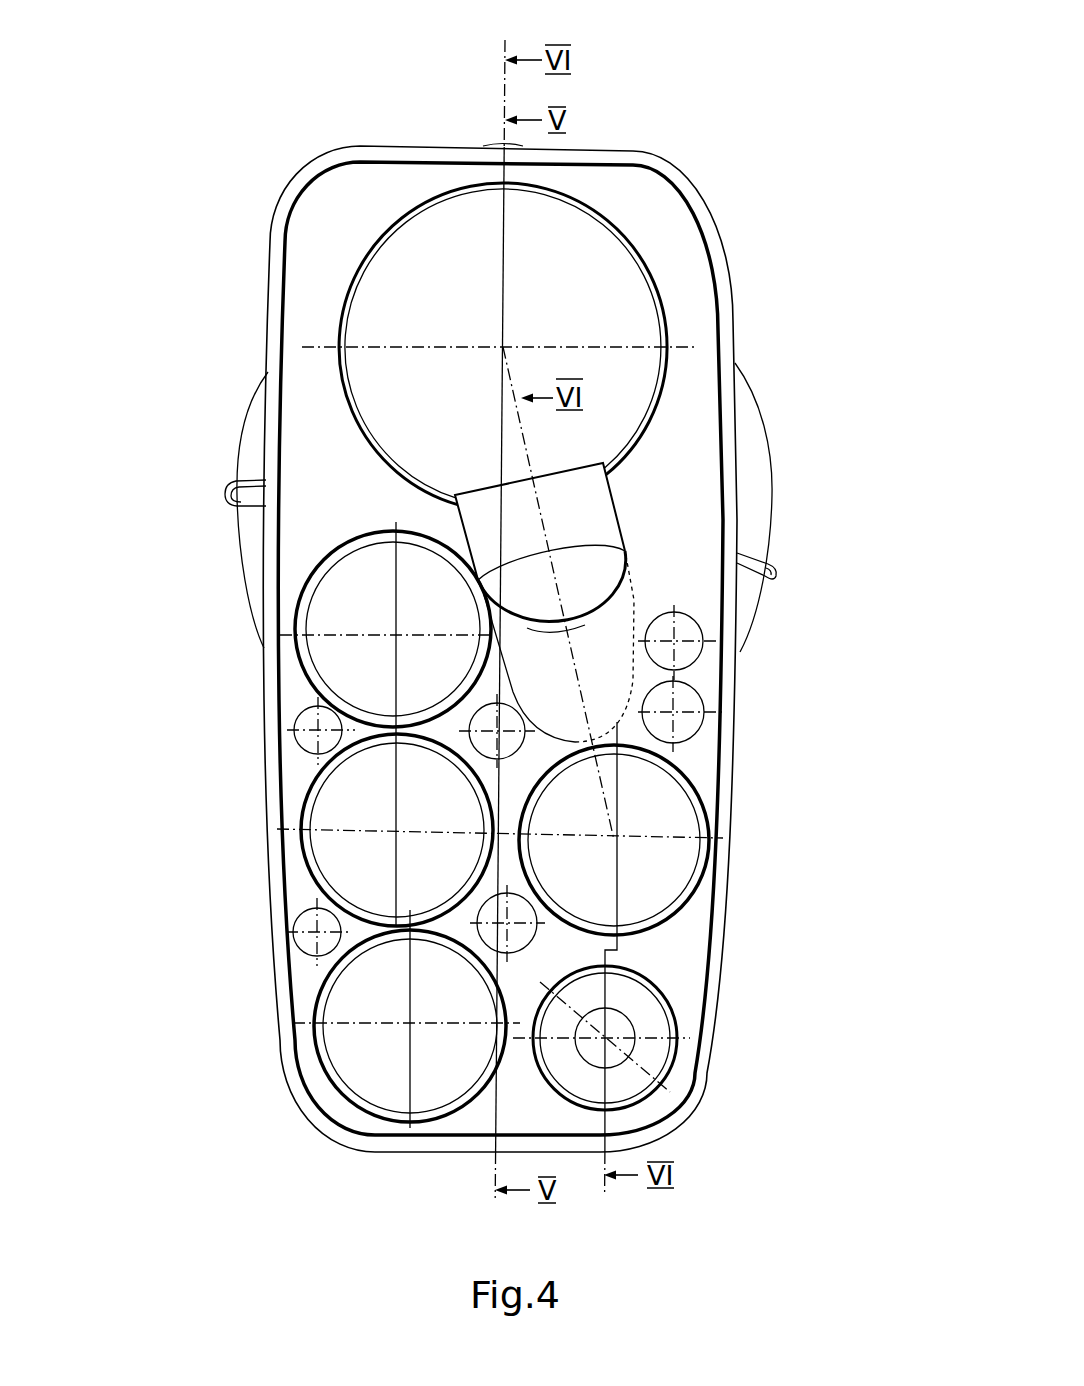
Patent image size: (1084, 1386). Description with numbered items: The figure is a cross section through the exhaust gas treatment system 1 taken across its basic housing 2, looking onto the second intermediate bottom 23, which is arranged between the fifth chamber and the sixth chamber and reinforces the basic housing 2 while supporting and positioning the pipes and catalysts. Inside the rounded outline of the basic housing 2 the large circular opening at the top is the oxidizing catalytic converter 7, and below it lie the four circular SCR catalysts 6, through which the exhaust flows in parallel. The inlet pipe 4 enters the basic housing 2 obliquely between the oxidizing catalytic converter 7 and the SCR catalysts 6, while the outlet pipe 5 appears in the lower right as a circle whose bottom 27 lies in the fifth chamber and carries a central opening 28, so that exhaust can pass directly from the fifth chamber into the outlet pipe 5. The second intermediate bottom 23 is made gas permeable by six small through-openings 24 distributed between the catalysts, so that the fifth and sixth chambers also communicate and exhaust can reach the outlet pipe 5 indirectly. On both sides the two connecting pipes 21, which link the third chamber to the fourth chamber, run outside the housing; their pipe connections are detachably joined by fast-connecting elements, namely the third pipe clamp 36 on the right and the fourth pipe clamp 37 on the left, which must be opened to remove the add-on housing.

The exhaust gas treatment system 1 is at (702, 123).
The basic housing 2 is at (708, 1088).
The inlet pipe 4 is at (570, 585).
The outlet pipe 5 is at (568, 1077).
The SCR catalyst 6 is at (360, 611).
The oxidizing catalytic converter 7 is at (590, 253).
The connecting pipe 21 is at (240, 413).
The second intermediate bottom 23 is at (680, 945).
The through-openings 24 is at (312, 743).
The bottom 27 is at (657, 1030).
The opening 28 is at (617, 1020).
The third pipe clamp 36 is at (780, 571).
The fourth pipe clamp 37 is at (227, 493).